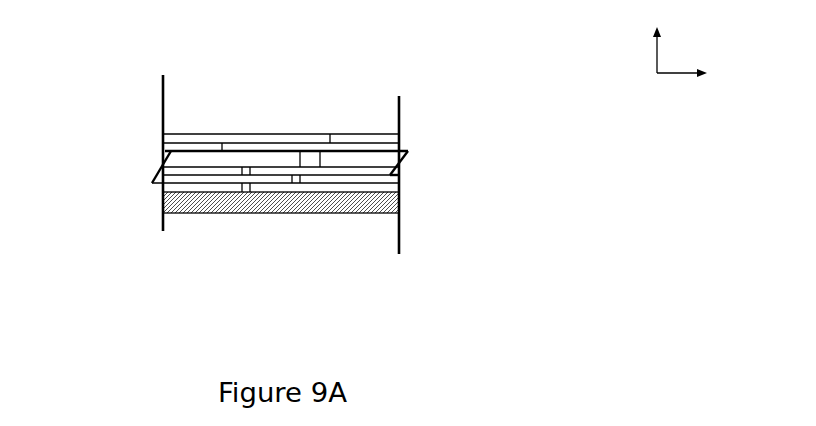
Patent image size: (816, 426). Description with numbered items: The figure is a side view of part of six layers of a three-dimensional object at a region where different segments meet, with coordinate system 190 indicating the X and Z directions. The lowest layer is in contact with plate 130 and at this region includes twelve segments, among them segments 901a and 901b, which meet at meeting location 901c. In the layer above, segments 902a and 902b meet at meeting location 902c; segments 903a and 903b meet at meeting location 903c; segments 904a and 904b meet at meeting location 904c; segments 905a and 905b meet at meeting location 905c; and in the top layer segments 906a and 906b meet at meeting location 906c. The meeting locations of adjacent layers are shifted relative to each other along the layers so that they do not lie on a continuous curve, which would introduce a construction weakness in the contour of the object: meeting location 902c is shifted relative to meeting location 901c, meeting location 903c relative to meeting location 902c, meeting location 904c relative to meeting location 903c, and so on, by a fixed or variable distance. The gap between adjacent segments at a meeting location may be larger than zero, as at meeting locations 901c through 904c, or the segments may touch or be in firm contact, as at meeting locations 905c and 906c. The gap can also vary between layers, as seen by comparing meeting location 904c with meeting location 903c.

The segment 906a is at (187, 138).
The segment 906b is at (372, 138).
The meeting location 906c is at (332, 137).
The segment 905a is at (187, 147).
The segment 905b is at (372, 147).
The meeting location 905c is at (222, 149).
The segment 904a is at (187, 159).
The segment 904b is at (372, 159).
The meeting location 904c is at (312, 158).
The segment 903a is at (187, 171).
The segment 903b is at (372, 171).
The meeting location 903c is at (246, 170).
The segment 902a is at (188, 179).
The segment 902b is at (372, 179).
The meeting location 902c is at (297, 179).
The segment 901a is at (188, 188).
The segment 901b is at (372, 188).
The meeting location 901c is at (246, 187).
The plate 130 is at (224, 205).
The coordinate system 190 is at (647, 71).